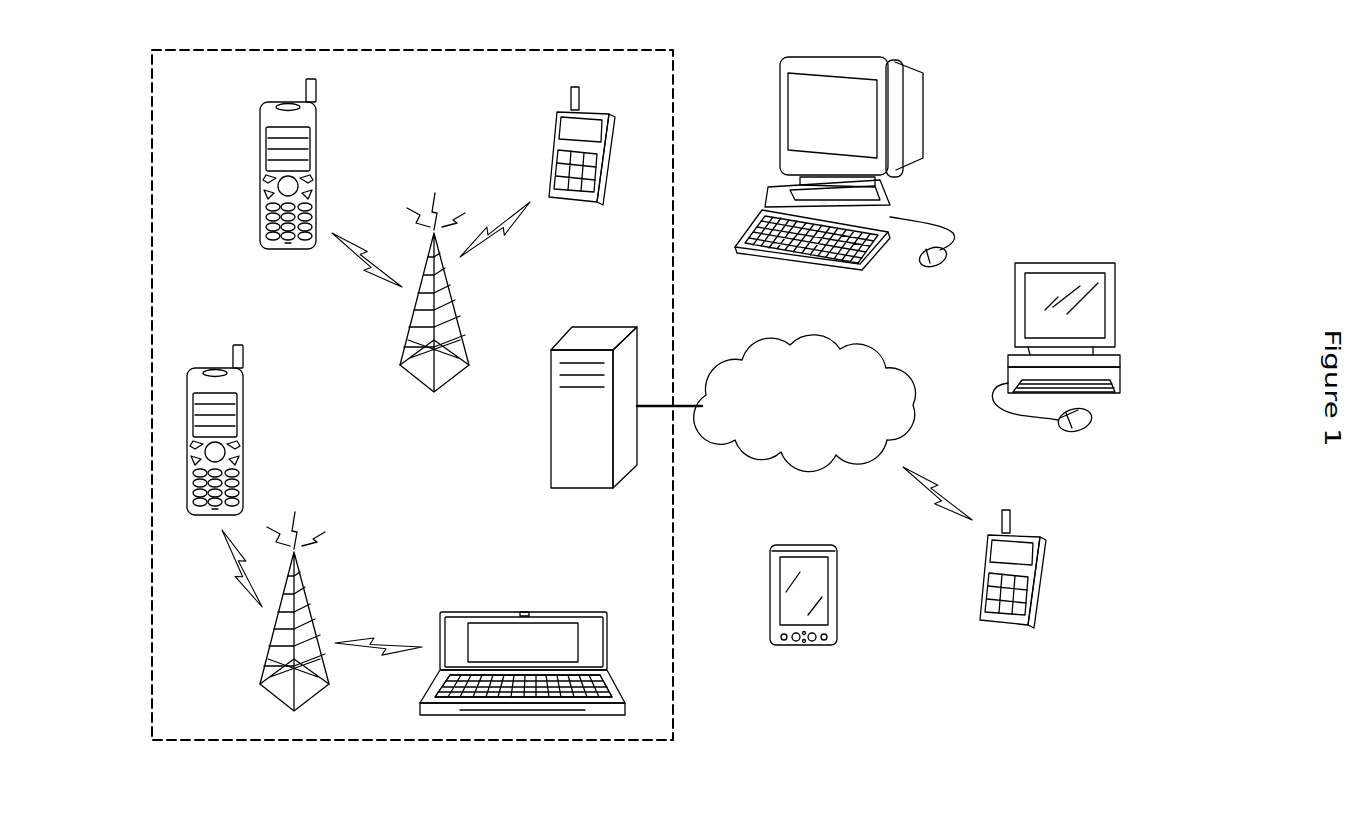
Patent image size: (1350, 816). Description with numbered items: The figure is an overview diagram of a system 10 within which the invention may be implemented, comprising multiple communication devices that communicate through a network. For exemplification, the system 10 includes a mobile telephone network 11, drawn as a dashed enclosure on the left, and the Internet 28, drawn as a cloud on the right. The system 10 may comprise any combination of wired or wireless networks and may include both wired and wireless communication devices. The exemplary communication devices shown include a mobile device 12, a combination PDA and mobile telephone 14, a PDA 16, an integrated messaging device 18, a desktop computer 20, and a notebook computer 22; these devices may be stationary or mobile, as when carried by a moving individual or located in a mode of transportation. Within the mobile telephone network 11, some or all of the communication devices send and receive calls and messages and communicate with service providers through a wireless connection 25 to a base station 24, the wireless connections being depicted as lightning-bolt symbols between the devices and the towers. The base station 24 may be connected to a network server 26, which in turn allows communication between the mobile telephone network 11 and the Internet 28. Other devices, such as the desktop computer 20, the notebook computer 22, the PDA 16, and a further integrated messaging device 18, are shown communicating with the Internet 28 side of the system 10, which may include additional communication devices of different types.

The system 10 is at (1085, 498).
The mobile telephone network 11 is at (172, 89).
The mobile device 12 is at (320, 173).
The combination PDA and mobile telephone 14 is at (525, 613).
The PDA 16 is at (838, 592).
The integrated messaging device 18 is at (550, 152).
The desktop computer 20 is at (923, 107).
The notebook computer 22 is at (1065, 263).
The base station 24 is at (453, 297).
The wireless connection 25 is at (242, 592).
The network server 26 is at (551, 420).
The Internet 28 is at (851, 341).